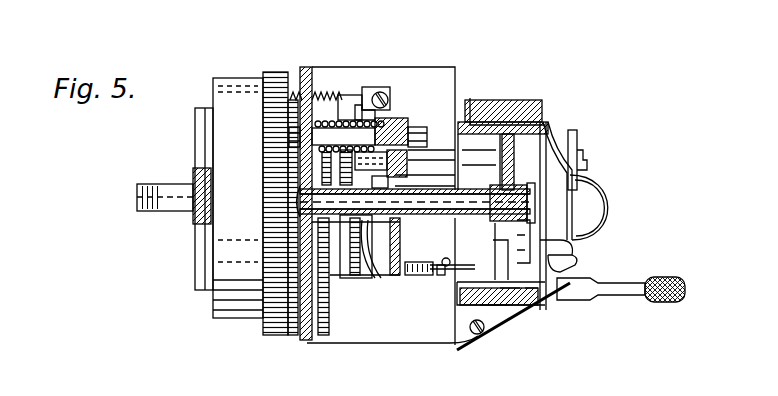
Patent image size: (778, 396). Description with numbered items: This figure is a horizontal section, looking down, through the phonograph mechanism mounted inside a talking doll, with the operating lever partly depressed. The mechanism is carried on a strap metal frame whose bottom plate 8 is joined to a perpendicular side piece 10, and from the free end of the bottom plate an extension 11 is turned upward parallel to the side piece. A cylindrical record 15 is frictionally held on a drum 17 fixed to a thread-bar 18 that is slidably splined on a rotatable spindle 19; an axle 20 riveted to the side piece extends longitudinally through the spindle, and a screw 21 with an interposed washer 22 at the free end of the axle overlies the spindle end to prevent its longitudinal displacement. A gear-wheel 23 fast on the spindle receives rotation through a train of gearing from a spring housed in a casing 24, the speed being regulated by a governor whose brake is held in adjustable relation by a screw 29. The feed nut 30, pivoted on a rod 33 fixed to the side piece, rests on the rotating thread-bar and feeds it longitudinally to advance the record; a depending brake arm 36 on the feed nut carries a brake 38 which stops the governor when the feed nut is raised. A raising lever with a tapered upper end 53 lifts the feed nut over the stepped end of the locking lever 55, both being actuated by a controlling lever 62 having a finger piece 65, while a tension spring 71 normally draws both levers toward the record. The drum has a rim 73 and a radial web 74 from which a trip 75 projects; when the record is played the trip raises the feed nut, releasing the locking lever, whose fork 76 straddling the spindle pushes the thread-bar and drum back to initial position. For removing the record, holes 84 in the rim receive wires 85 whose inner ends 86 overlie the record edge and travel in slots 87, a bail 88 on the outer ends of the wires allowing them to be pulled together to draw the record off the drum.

The bottom plate 8 is at (337, 330).
The side piece 10 is at (302, 334).
The extension 11 is at (578, 157).
The cylindrical record 15 is at (528, 123).
The drum 17 is at (483, 128).
The thread-bar 18 is at (437, 175).
The spindle 19 is at (364, 222).
The axle 20 is at (417, 214).
The screw 21 is at (590, 200).
The washer 22 is at (590, 238).
The gear-wheel 23 is at (305, 178).
The casing 24 is at (232, 302).
The screw 29 is at (323, 92).
The feed nut 30 is at (392, 225).
The rod 33 is at (340, 140).
The brake arm 36 is at (375, 118).
The brake 38 is at (342, 95).
The tapered upper end 53 is at (430, 275).
The locking lever 55 is at (392, 98).
The controlling lever 62 is at (563, 292).
The finger piece 65 is at (657, 302).
The tension spring 71 is at (590, 273).
The rim 73 is at (520, 163).
The radial web 74 is at (560, 158).
The trip 75 is at (495, 305).
The fork 76 is at (388, 181).
The holes 84 is at (535, 302).
The wires 85 is at (508, 302).
The inner ends 86 is at (470, 97).
The slots 87 is at (472, 308).
The bail 88 is at (605, 215).